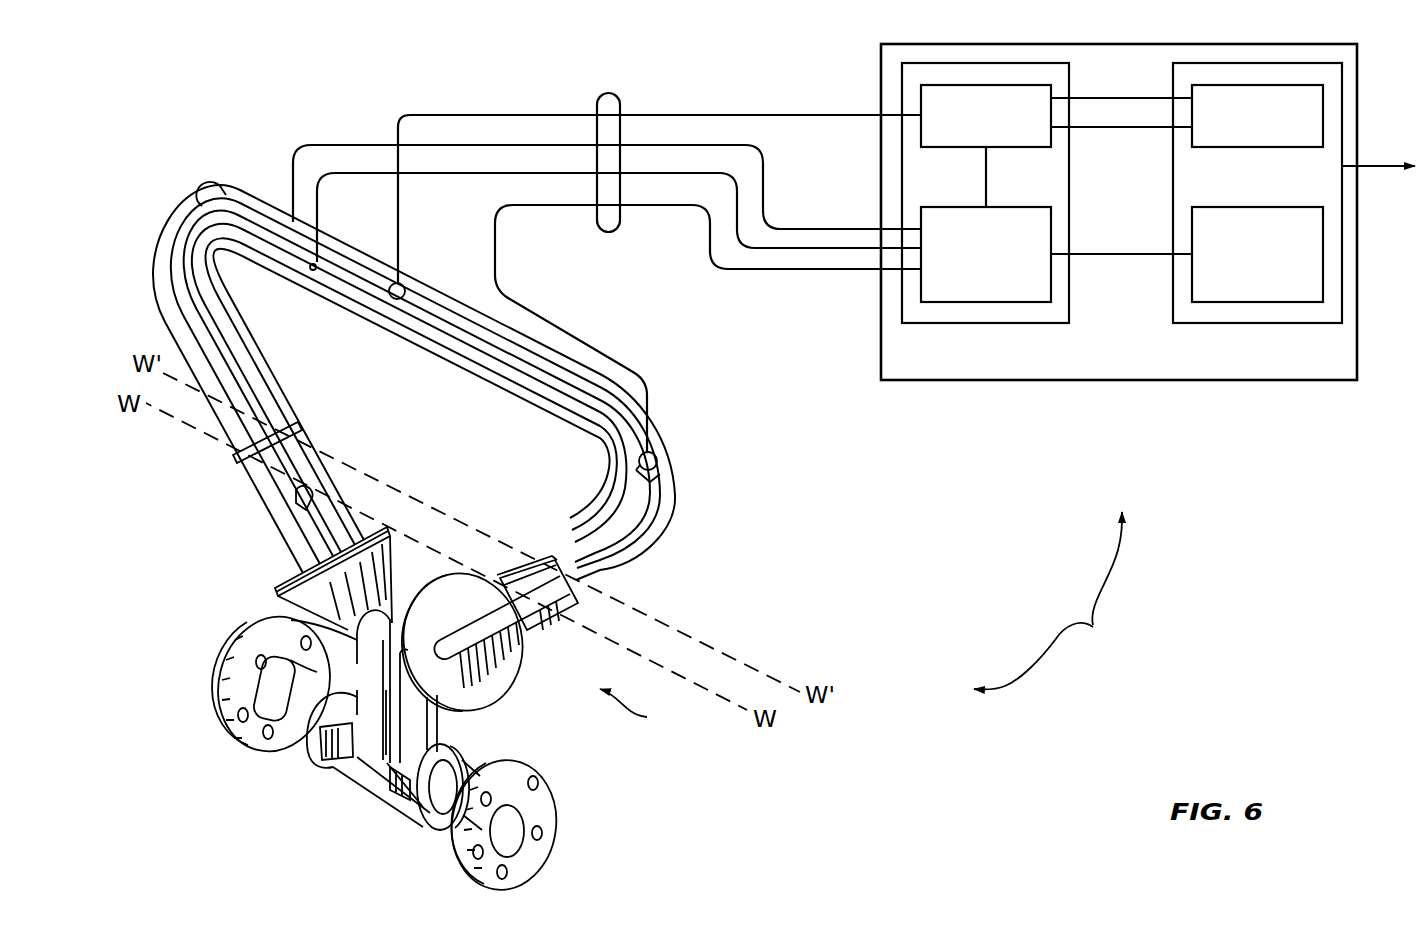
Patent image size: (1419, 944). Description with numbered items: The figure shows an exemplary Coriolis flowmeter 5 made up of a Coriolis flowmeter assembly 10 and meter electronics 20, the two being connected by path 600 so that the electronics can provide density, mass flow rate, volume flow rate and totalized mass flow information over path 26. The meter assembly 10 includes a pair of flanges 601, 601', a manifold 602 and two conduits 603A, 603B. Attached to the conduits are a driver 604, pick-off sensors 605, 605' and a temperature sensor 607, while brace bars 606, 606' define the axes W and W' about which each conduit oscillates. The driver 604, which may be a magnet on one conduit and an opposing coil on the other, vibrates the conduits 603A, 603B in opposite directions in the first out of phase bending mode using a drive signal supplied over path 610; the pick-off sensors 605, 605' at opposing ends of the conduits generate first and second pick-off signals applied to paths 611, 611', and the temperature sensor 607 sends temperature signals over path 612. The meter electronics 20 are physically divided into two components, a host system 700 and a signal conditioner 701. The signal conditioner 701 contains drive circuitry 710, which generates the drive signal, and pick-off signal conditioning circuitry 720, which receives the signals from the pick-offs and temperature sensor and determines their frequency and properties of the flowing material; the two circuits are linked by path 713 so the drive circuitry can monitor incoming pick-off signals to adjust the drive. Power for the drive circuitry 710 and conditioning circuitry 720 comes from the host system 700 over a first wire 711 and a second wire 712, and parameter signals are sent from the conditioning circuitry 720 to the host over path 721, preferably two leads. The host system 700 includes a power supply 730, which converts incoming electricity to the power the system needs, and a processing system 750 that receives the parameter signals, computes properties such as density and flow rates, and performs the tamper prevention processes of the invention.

The Coriolis flowmeter 5 is at (1048, 601).
The Coriolis flowmeter assembly 10 is at (637, 710).
The meter electronics 20 is at (878, 70).
The path 26 is at (1402, 164).
The path 600 is at (600, 98).
The flange 601 is at (231, 684).
The flange 601' is at (536, 824).
The manifold 602 is at (372, 720).
The conduit 603A is at (338, 292).
The conduit 603B is at (483, 340).
The driver 604 is at (382, 284).
The pick-off sensor 605 is at (195, 166).
The pick-off sensor 605' is at (704, 465).
The brace bar 606 is at (239, 466).
The brace bar 606' is at (549, 560).
The temperature sensor 607 is at (310, 269).
The path 610 is at (688, 113).
The path 611 is at (607, 187).
The path 611' is at (708, 328).
The path 612 is at (790, 250).
The host system 700 is at (1265, 324).
The signal conditioner 701 is at (995, 324).
The drive circuitry 710 is at (962, 148).
The first wire 711 is at (1128, 97).
The second wire 712 is at (1125, 129).
The path 713 is at (988, 160).
The pick-off signal conditioning circuitry 720 is at (1052, 212).
The path 721 is at (1118, 255).
The power supply 730 is at (1246, 148).
The processing system 750 is at (1262, 207).